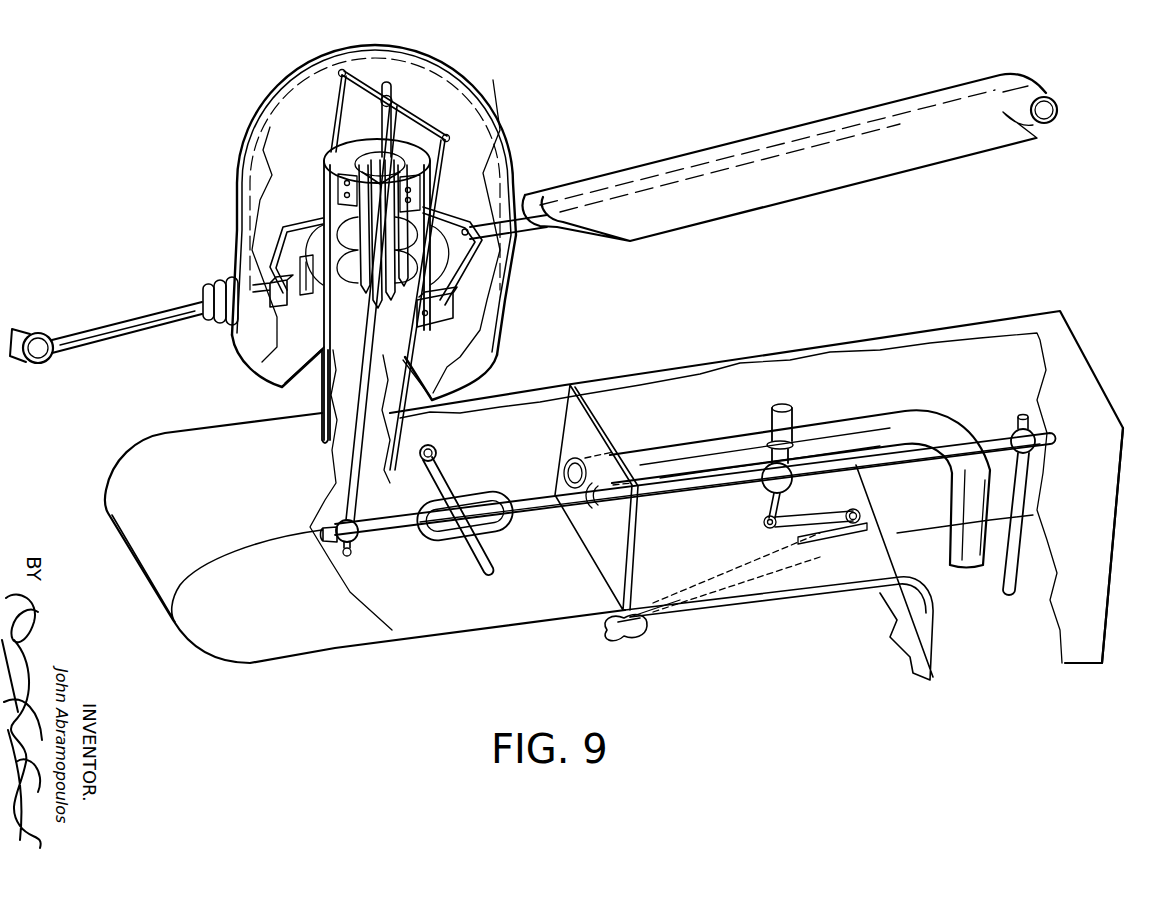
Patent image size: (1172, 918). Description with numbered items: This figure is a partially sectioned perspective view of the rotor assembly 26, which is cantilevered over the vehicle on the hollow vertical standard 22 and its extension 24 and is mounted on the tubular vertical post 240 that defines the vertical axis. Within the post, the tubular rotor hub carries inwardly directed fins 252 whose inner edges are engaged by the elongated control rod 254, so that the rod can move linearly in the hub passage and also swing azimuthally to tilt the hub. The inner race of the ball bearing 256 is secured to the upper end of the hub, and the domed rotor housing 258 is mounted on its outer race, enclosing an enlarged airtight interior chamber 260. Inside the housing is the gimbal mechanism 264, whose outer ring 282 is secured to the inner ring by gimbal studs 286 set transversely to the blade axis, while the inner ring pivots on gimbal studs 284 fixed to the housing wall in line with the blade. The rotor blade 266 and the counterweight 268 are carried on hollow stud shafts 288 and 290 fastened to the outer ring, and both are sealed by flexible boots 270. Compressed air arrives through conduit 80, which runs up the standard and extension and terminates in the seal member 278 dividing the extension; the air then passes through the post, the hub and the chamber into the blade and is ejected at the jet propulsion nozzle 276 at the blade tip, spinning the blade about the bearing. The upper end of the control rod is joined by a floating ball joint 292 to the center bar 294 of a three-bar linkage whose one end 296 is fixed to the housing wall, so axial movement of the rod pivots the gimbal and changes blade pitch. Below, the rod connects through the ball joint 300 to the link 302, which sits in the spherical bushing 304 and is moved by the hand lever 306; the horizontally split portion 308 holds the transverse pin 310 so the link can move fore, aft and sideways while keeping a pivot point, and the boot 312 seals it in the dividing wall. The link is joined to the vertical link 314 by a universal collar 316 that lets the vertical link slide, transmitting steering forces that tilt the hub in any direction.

The vertical standard 22 is at (1120, 490).
The extension 24 is at (855, 335).
The rotor assembly 26 is at (531, 151).
The conduit 80 is at (972, 568).
The vertical post 240 is at (322, 400).
The fins 252 is at (400, 157).
The control rod 254 is at (357, 506).
The ball bearing 256 is at (338, 185).
The rotor housing 258 is at (487, 98).
The interior chamber 260 is at (423, 78).
The gimbal mechanism 264 is at (475, 291).
The rotor blade 266 is at (855, 182).
The counterweight 268 is at (35, 328).
The flexible boots 270 is at (220, 276).
The jet propulsion nozzle 276 is at (1056, 121).
The seal member 278 is at (631, 562).
The outer ring 282 is at (379, 255).
The gimbal studs 284 is at (279, 313).
The gimbal studs 286 is at (425, 316).
The hollow stud shaft 288 is at (520, 229).
The hollow stud shaft 290 is at (268, 220).
The floating ball joint 292 is at (384, 96).
The center bar 294 is at (410, 112).
The linkage end 296 is at (337, 137).
The ball joint 300 is at (355, 545).
The link 302 is at (690, 500).
The spherical bushing 304 is at (792, 487).
The hand lever 306 is at (647, 628).
The split portion 308 is at (480, 497).
The transverse pin 310 is at (495, 555).
The boot 312 is at (587, 515).
The vertical link 314 is at (1018, 575).
The universal collar 316 is at (1018, 432).